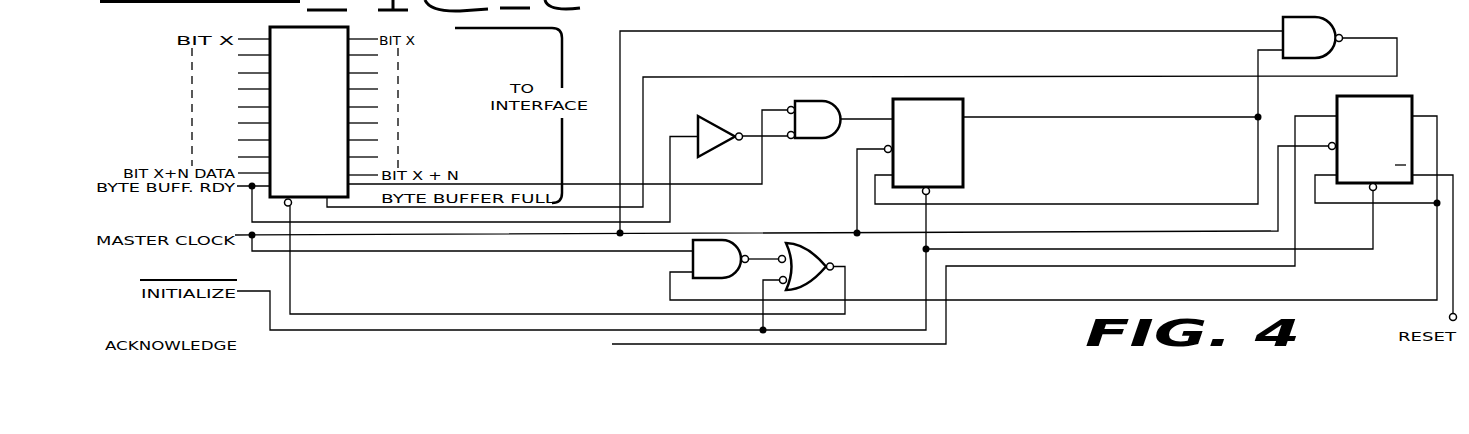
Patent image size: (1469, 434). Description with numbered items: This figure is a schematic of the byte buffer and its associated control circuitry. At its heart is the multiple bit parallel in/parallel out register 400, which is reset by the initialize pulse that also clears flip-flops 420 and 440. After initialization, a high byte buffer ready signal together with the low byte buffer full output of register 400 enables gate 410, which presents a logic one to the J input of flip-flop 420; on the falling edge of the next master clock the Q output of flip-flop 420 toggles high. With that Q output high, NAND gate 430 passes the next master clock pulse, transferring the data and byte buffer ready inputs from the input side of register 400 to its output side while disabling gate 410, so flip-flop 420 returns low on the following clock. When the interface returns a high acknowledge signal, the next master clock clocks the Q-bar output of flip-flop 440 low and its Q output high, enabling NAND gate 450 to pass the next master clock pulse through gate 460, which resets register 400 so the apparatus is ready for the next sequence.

The multiple bit parallel in/parallel out register 400 is at (307, 116).
The gate 410 is at (812, 141).
The flip-flop 420 is at (963, 158).
The NAND gate 430 is at (1322, 17).
The flip-flop 440 is at (1392, 96).
The NAND gate 450 is at (703, 279).
The gate 460 is at (820, 256).